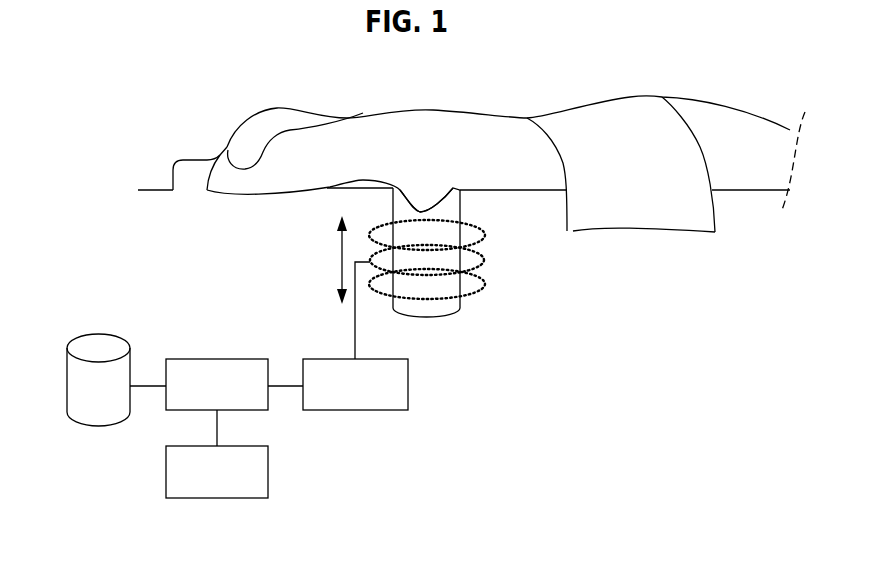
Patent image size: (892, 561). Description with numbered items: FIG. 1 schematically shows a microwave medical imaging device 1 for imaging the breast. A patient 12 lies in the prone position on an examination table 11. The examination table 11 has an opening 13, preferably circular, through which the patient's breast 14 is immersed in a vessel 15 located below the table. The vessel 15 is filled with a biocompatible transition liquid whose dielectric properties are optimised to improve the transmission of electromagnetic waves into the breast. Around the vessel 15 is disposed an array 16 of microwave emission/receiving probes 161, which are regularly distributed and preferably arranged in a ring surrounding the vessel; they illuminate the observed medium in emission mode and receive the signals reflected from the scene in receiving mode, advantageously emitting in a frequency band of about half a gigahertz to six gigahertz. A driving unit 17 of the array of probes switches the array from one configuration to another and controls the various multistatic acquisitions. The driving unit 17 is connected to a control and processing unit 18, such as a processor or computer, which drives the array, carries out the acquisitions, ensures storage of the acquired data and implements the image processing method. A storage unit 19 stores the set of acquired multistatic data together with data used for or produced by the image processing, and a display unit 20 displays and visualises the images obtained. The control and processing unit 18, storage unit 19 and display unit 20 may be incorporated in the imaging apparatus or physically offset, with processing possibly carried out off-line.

The microwave medical imaging device 1 is at (588, 336).
The examination table 11 is at (266, 239).
The patient 12 is at (522, 95).
The opening 13 is at (462, 192).
The breast 14 is at (427, 198).
The vessel 15 is at (425, 318).
The array of microwave emission/receiving probes 16 is at (464, 288).
The microwave emission/receiving probes 161 is at (477, 265).
The driving unit 17 is at (367, 396).
The control and processing unit 18 is at (230, 396).
The storage unit 19 is at (110, 396).
The display unit 20 is at (230, 484).